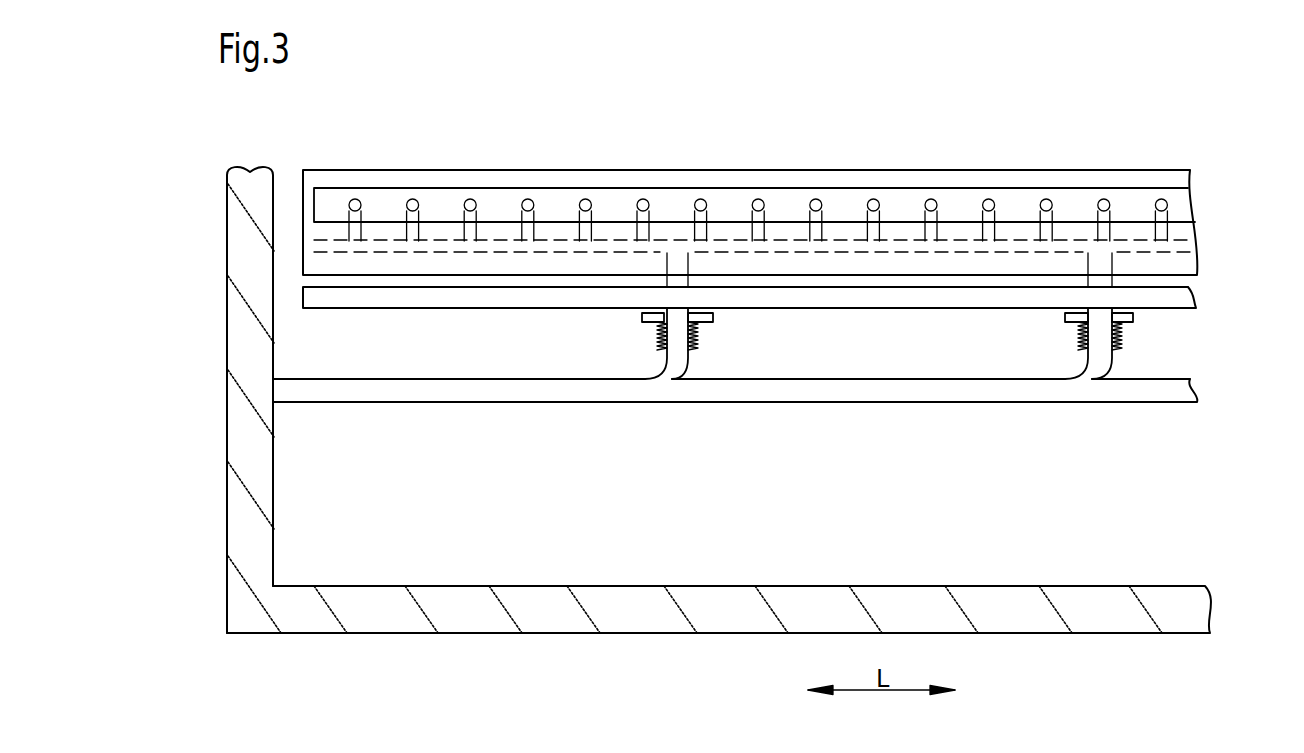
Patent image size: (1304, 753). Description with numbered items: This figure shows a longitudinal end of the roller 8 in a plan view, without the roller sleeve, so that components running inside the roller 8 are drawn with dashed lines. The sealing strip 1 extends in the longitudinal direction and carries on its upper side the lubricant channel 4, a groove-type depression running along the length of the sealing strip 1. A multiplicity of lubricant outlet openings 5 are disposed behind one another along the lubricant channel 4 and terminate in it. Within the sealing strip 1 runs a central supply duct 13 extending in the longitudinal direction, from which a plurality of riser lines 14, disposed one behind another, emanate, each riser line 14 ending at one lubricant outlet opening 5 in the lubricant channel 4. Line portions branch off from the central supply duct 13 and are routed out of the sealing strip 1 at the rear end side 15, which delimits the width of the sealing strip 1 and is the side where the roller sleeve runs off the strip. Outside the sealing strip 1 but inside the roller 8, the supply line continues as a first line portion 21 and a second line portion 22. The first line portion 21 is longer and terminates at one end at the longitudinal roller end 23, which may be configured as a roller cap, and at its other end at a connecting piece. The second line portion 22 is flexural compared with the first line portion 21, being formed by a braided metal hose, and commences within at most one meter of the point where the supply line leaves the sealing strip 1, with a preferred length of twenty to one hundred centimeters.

The sealing strip 1 is at (551, 182).
The lubricant channel 4 is at (839, 204).
The lubricant outlet openings 5 is at (931, 205).
The riser lines 14 is at (478, 213).
The central supply duct 13 is at (1187, 246).
The rear end side 15 is at (1177, 277).
The first line portion 21 is at (755, 389).
The second line portion 22 is at (698, 338).
The longitudinal roller end 23 is at (248, 303).
The roller 8 is at (625, 608).